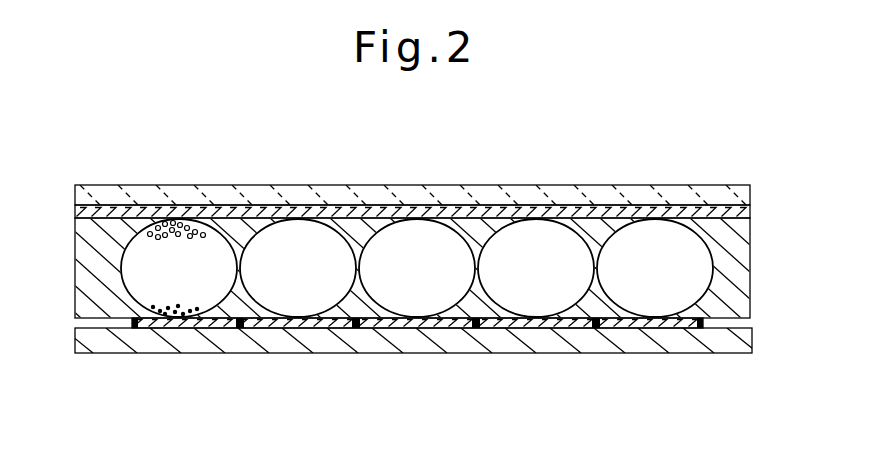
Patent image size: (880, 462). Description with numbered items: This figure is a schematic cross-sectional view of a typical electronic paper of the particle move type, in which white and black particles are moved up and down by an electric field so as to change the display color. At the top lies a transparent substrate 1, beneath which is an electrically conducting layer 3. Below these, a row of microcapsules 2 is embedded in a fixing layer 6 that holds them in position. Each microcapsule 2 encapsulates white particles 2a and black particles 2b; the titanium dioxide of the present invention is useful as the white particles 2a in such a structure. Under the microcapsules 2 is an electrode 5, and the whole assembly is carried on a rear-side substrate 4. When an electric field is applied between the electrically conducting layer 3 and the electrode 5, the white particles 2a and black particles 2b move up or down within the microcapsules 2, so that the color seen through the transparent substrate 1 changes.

The transparent substrate 1 is at (577, 191).
The microcapsules 2 is at (403, 260).
The white particles 2a is at (181, 222).
The black particles 2b is at (185, 313).
The electrically conducting layer 3 is at (255, 212).
The rear-side substrate 4 is at (648, 343).
The electrode 5 is at (403, 323).
The fixing layer 6 is at (92, 282).